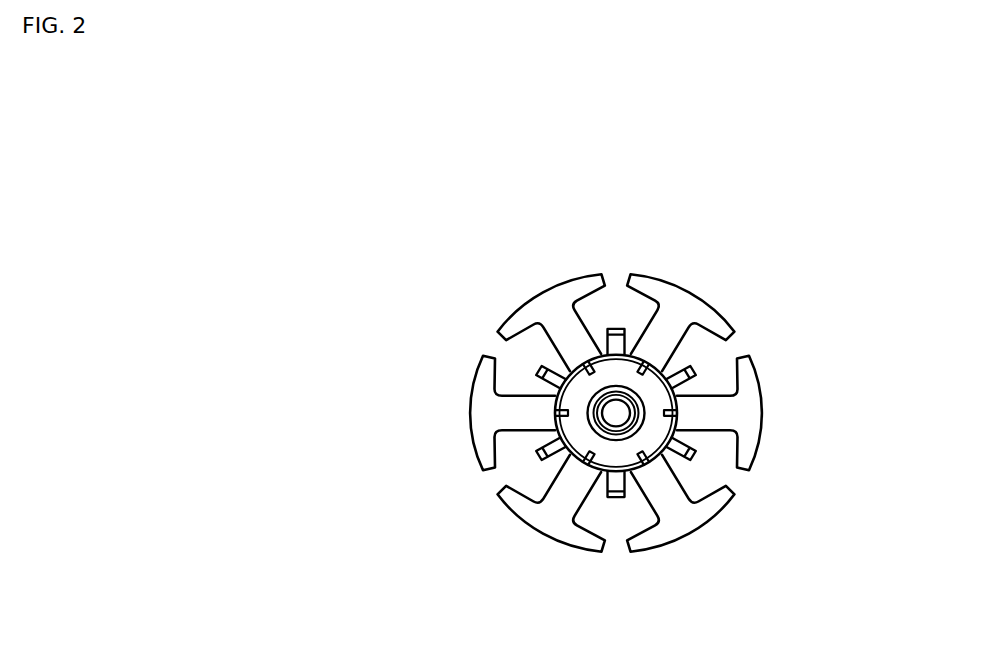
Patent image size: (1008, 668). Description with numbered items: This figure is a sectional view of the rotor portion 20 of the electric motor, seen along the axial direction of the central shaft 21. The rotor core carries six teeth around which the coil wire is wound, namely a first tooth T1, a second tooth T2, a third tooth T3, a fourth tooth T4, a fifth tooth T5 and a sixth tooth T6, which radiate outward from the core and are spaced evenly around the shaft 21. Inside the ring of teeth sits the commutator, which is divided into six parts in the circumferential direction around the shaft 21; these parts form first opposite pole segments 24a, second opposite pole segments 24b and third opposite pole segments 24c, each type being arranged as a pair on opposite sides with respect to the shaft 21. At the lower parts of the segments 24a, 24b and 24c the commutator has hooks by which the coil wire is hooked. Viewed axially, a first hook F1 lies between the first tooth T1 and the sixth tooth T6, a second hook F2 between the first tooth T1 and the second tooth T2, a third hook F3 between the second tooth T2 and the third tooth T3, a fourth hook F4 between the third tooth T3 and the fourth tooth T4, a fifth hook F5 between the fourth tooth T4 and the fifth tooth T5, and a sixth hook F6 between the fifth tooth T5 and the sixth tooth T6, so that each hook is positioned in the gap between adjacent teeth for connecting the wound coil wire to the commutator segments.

The rotor portion 20 is at (690, 262).
The shaft 21 is at (617, 410).
The first opposite pole segments 24a is at (596, 348).
The second opposite pole segments 24b is at (556, 393).
The third opposite pole segments 24c is at (680, 398).
The first tooth T1 is at (545, 288).
The second tooth T2 is at (468, 406).
The third tooth T3 is at (523, 525).
The fourth tooth T4 is at (710, 523).
The fifth tooth T5 is at (762, 403).
The sixth tooth T6 is at (700, 293).
The first hook F1 is at (616, 330).
The second hook F2 is at (540, 370).
The third hook F3 is at (545, 455).
The fourth hook F4 is at (618, 497).
The fifth hook F5 is at (693, 453).
The sixth hook F6 is at (695, 370).